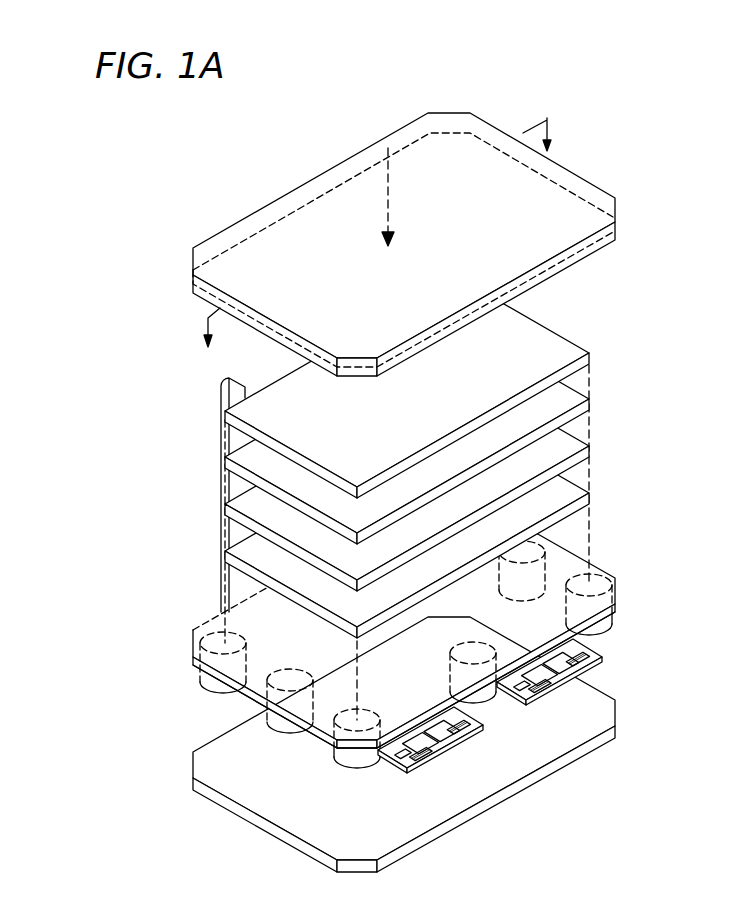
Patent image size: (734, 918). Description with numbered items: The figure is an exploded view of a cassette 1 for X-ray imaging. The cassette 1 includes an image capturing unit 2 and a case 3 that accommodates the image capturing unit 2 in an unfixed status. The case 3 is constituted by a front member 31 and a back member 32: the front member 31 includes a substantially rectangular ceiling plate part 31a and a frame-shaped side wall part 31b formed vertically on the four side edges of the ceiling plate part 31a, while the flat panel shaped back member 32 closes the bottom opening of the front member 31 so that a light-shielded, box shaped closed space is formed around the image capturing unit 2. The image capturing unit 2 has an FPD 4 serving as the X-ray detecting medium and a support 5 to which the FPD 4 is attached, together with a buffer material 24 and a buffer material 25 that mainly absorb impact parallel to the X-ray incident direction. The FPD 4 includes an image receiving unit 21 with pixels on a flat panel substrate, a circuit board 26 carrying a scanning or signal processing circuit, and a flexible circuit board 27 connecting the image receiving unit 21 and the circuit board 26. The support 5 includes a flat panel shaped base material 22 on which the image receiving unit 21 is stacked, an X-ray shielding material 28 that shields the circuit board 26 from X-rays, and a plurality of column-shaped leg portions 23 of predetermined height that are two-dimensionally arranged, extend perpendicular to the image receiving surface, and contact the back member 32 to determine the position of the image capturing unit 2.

The cassette 1 is at (605, 142).
The image capturing unit 2 is at (202, 383).
The case 3 is at (226, 208).
The FPD 4 is at (126, 440).
The support 5 is at (679, 478).
The image receiving unit 21 is at (226, 466).
The base material 22 is at (573, 566).
The leg portions 23 is at (617, 612).
The buffer material 24 is at (580, 352).
The buffer material 25 is at (574, 447).
The circuit board 26 is at (603, 670).
The flexible circuit board 27 is at (222, 532).
The X-ray shielding material 28 is at (573, 492).
The front member 31 is at (685, 168).
The ceiling plate part 31a is at (566, 212).
The side wall part 31b is at (601, 249).
The back member 32 is at (604, 718).